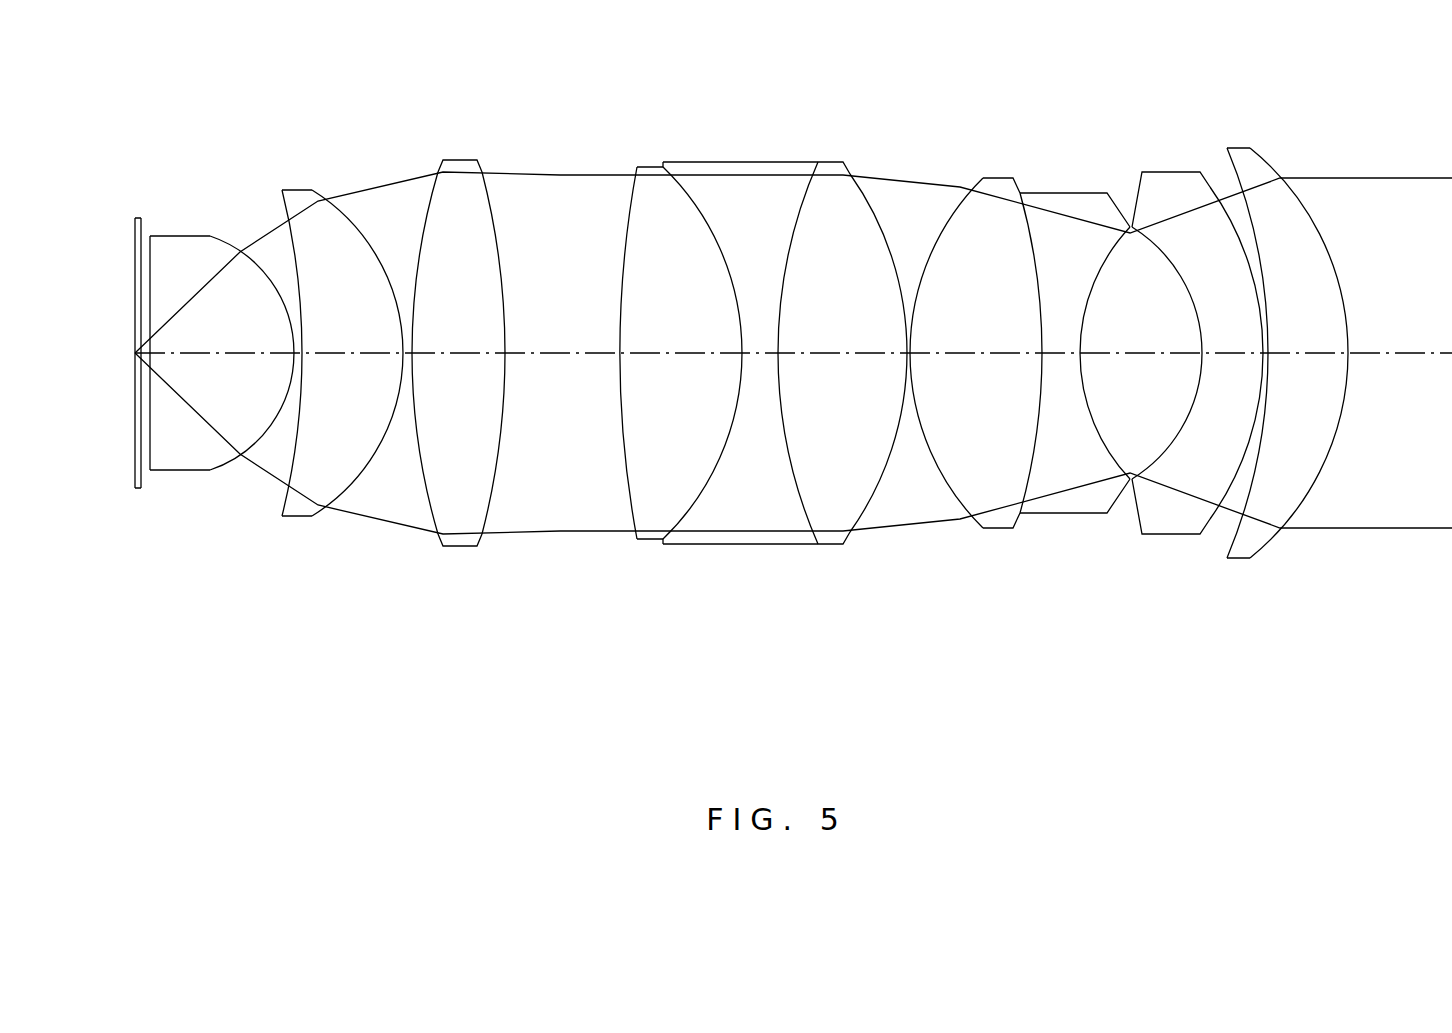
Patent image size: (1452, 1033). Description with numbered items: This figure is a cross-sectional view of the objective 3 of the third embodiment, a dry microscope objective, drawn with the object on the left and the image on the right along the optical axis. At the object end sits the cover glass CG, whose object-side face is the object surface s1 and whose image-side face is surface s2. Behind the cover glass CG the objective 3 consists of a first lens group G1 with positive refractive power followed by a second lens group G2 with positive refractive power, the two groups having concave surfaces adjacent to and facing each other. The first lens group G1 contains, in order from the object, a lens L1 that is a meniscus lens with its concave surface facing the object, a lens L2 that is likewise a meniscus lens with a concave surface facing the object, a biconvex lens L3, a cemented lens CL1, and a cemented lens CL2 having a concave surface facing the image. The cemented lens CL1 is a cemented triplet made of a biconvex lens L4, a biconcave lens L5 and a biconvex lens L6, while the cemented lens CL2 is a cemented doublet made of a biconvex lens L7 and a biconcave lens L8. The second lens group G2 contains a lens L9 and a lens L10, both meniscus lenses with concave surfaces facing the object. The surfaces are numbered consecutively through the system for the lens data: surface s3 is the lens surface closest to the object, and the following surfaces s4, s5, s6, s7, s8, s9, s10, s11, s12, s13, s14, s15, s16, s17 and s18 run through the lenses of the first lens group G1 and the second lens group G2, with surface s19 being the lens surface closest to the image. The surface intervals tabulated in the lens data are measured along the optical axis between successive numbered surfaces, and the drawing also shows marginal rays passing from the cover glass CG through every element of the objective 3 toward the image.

The objective 3 is at (1430, 73).
The cover glass CG is at (130, 374).
The first lens group G1 is at (640, 423).
The second lens group G2 is at (1241, 427).
The cemented lens CL1 is at (753, 390).
The cemented lens CL2 is at (1020, 394).
The lens L1 is at (222, 376).
The lens L2 is at (331, 376).
The lens L3 is at (448, 362).
The lens L4 is at (671, 360).
The lens L5 is at (740, 364).
The lens L6 is at (861, 362).
The lens L7 is at (976, 364).
The lens L8 is at (1075, 365).
The lens L9 is at (1197, 364).
The lens L10 is at (1288, 362).
The surface number s1 is at (135, 218).
The surface number s2 is at (140, 230).
The surface number s3 is at (153, 307).
The surface number s4 is at (240, 252).
The surface number s5 is at (293, 277).
The surface number s6 is at (377, 260).
The surface number s7 is at (423, 233).
The surface number s8 is at (492, 220).
The surface number s9 is at (625, 237).
The surface number s10 is at (715, 242).
The surface number s11 is at (787, 253).
The surface number s12 is at (888, 242).
The surface number s13 is at (937, 243).
The surface number s14 is at (1030, 240).
The surface number s15 is at (1090, 290).
The surface number s16 is at (1182, 290).
The surface number s17 is at (1213, 195).
The surface number s18 is at (1243, 220).
The surface number s19 is at (1308, 217).